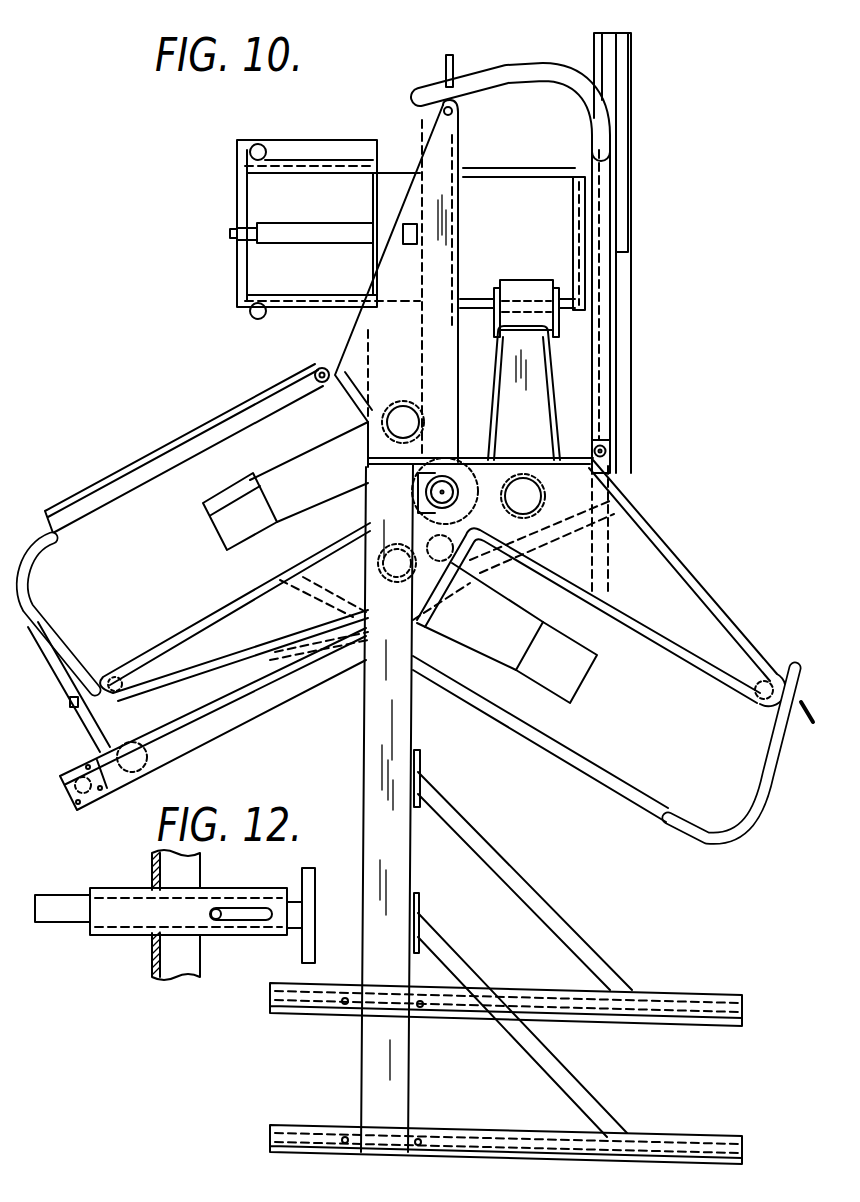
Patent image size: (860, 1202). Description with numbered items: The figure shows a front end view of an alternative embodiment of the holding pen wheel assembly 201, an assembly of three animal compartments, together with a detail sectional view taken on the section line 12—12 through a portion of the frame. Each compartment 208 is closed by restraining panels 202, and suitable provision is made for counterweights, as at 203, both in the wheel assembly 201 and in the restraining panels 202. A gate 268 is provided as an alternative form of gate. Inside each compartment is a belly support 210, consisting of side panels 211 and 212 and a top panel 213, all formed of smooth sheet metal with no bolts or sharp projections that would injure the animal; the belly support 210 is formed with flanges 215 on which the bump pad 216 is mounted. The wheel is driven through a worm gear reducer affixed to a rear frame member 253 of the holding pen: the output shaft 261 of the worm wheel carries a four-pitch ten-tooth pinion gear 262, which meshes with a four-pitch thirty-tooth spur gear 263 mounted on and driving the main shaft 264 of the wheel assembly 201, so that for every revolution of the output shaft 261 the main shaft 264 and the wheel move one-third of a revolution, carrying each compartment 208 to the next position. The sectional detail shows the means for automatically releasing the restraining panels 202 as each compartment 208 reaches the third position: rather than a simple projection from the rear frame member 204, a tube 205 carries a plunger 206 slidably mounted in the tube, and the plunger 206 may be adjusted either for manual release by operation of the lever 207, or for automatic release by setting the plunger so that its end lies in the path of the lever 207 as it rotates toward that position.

In FIG. 10, the compartment 208 is at (540, 96).
In FIG. 10, the rear frame member 204 is at (633, 176).
In FIG. 12, the rear frame member 204 is at (190, 870).
In FIG. 10, the restraining panel 202 is at (606, 279).
In FIG. 10, the holding pen wheel assembly 201 is at (353, 338).
In FIG. 10, the gate 268 is at (503, 175).
In FIG. 10, the bump pad 216 is at (524, 291).
In FIG. 10, the flange 215 is at (559, 312).
In FIG. 10, the side panel 211 is at (498, 367).
In FIG. 10, the side panel 212 is at (553, 383).
In FIG. 10, the top panel 213 is at (532, 333).
In FIG. 10, the belly support 210 is at (540, 387).
In FIG. 10, the rear frame member 253 is at (402, 1080).
In FIG. 10, the output shaft 261 is at (457, 601).
In FIG. 10, the pinion gear 262 is at (491, 577).
In FIG. 10, the spur gear 263 is at (470, 462).
In FIG. 10, the main shaft 264 is at (446, 492).
In FIG. 10, the counterweight 203 is at (388, 424).
In FIG. 10, the lever 207 is at (73, 700).
In FIG. 10, the section line 12— 12 is at (150, 748).
In FIG. 12, the tube 205 is at (136, 920).
In FIG. 12, the plunger 206 is at (67, 918).